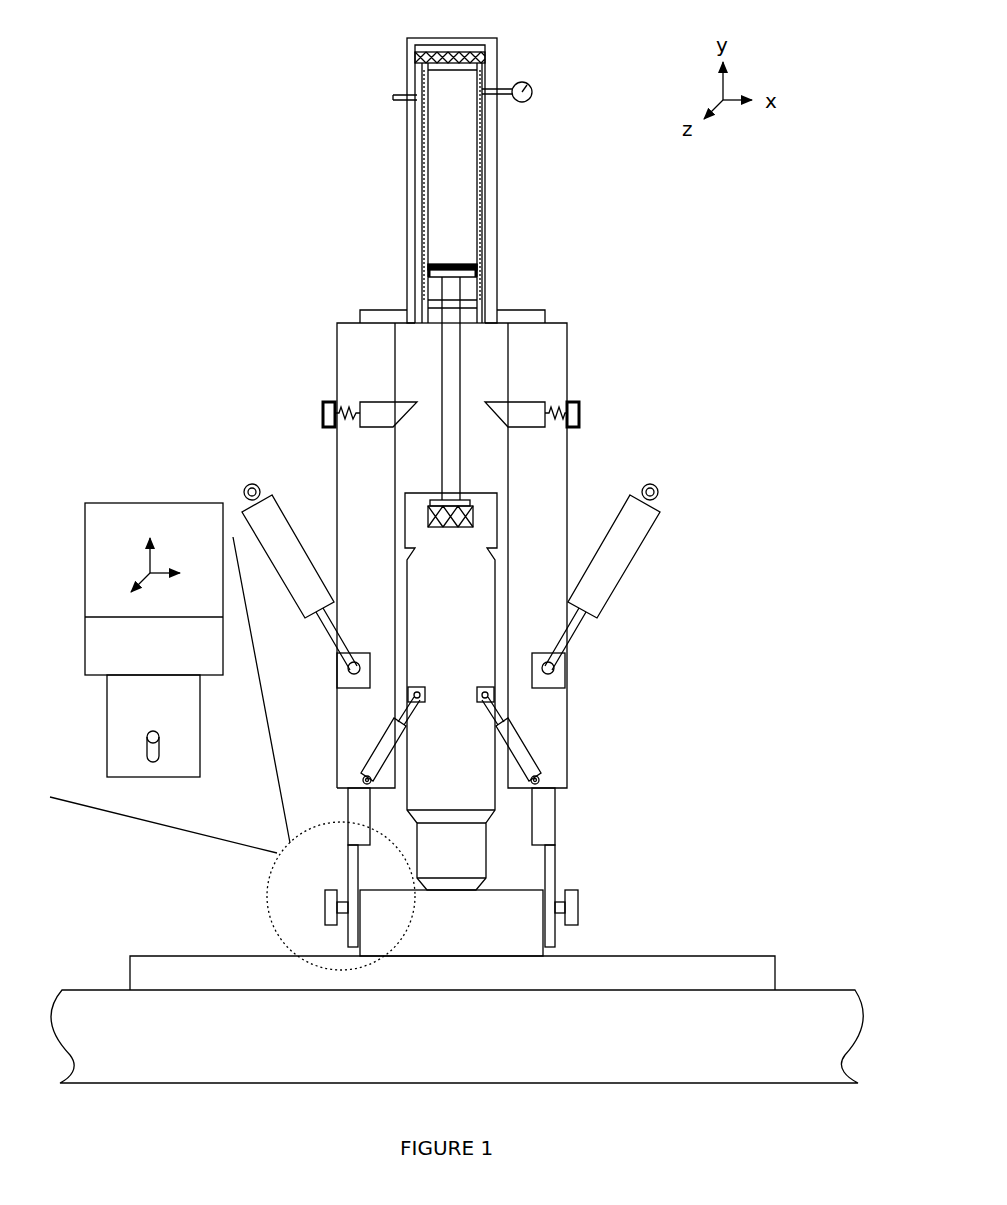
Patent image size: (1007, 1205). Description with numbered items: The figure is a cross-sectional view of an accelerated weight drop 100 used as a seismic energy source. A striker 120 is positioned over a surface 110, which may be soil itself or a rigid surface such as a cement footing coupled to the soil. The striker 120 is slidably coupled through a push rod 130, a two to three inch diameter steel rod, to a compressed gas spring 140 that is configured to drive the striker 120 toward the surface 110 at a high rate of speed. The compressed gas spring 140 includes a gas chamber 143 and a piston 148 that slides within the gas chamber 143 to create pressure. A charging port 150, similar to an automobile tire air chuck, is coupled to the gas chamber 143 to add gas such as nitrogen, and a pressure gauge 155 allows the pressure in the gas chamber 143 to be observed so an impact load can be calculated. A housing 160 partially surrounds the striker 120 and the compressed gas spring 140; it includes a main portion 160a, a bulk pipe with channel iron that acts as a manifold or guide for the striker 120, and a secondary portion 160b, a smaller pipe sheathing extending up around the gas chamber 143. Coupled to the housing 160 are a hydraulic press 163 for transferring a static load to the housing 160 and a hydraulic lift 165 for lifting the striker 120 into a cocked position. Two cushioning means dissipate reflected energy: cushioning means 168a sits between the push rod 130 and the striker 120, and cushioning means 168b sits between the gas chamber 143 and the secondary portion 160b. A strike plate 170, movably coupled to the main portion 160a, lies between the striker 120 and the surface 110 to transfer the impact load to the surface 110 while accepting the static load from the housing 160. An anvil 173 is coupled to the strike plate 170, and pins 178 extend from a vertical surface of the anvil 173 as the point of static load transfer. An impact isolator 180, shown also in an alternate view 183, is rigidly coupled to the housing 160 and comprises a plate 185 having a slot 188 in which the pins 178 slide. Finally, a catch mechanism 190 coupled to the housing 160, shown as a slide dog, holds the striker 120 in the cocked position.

The accelerated weight drop 100 is at (165, 104).
The surface 110 is at (472, 1075).
The striker 120 is at (472, 800).
The push rod 130 is at (462, 475).
The compressed gas spring 140 is at (417, 128).
The gas chamber 143 is at (423, 205).
The piston 148 is at (433, 275).
The charging port 150 is at (393, 97).
The pressure gauge 155 is at (532, 92).
The housing 160 is at (562, 408).
The main portion 160a is at (567, 338).
The secondary portion 160b is at (497, 50).
The hydraulic press 163 is at (674, 503).
The hydraulic lift 165 is at (548, 755).
The cushioning means 168a is at (474, 520).
The cushioning means 168b is at (415, 57).
The strike plate 170 is at (775, 970).
The anvil 173 is at (472, 947).
The pins 178 is at (578, 904).
The impact isolator 180 is at (349, 680).
The alternate view 183 is at (121, 445).
The plate 185 is at (107, 695).
The slot 188 is at (147, 748).
The catch mechanism 190 is at (594, 415).